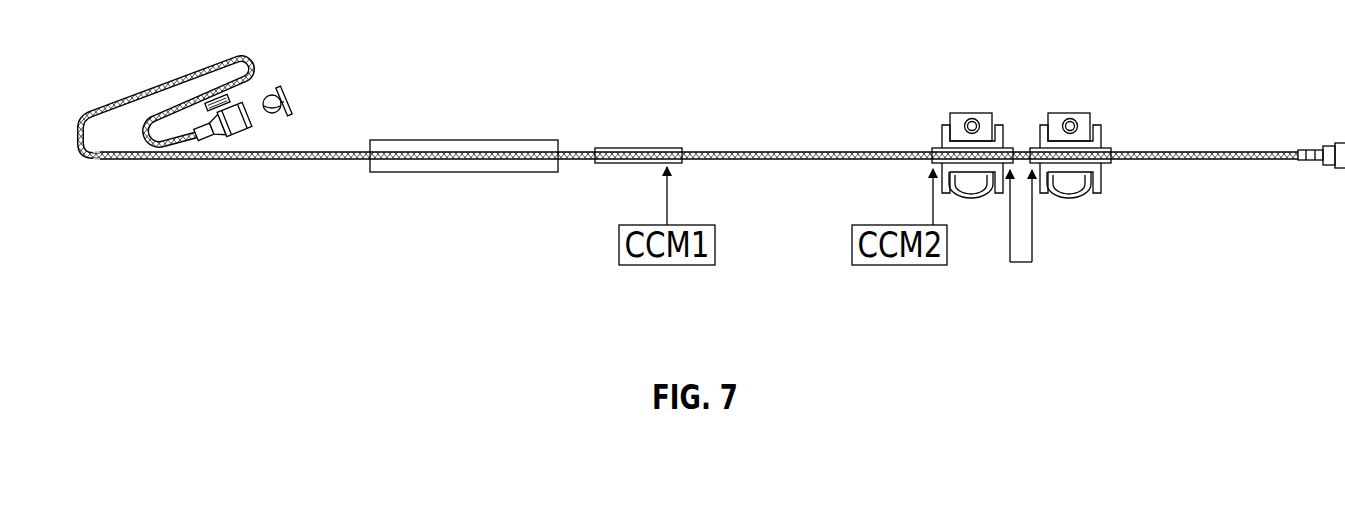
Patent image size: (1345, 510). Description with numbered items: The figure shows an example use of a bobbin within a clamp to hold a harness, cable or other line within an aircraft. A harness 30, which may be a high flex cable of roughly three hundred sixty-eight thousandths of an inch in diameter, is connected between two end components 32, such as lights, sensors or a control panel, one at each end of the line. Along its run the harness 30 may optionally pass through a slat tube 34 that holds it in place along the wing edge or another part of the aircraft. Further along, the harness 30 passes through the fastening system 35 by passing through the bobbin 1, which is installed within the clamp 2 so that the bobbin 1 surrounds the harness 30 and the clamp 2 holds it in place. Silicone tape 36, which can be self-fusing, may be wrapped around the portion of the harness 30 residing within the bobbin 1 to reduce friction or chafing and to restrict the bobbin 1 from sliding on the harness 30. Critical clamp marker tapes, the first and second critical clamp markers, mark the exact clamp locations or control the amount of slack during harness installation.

The harness 30 is at (807, 150).
The end components 32 is at (248, 106).
The slat tube 34 is at (483, 172).
The bobbin 1 is at (963, 121).
The clamp 2 is at (961, 112).
The fastening system 35 is at (980, 106).
The silicone tape 36 is at (1021, 262).